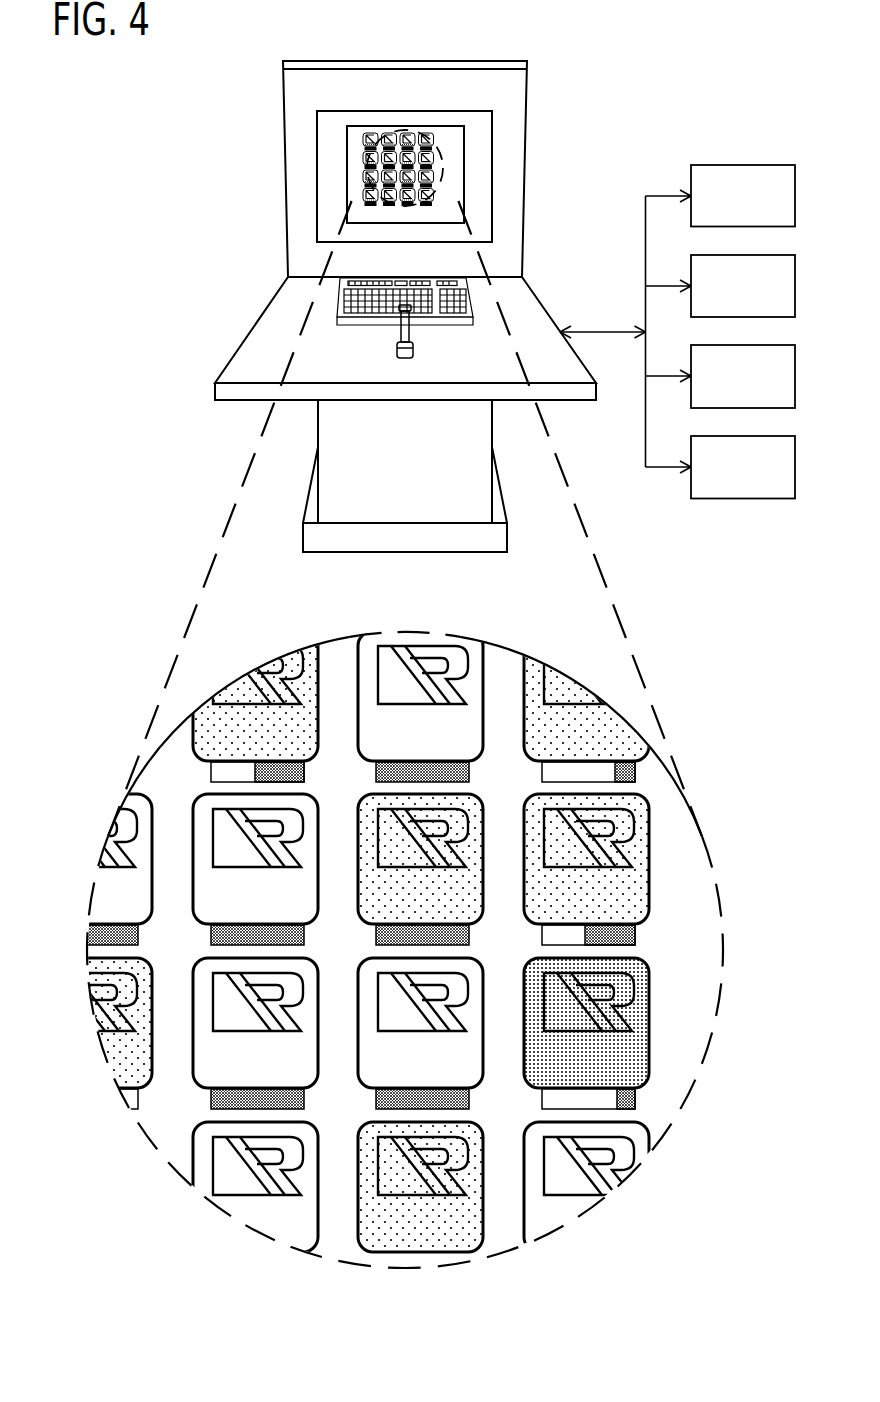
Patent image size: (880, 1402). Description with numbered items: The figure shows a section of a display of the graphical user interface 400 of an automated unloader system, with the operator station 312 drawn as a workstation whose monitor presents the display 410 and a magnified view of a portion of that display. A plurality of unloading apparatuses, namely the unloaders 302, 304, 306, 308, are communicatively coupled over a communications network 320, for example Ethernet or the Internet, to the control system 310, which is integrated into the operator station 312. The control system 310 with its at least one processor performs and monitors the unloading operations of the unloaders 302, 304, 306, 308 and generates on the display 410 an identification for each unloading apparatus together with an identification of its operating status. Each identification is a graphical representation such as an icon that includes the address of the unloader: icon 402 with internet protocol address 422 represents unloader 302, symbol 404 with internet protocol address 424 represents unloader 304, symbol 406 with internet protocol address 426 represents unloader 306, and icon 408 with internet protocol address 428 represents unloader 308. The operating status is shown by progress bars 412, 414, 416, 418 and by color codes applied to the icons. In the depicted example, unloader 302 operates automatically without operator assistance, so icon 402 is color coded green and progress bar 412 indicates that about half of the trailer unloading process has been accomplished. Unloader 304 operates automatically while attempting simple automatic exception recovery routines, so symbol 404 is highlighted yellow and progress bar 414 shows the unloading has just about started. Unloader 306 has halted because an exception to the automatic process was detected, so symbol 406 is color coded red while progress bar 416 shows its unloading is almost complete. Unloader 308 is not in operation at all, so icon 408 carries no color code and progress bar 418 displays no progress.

The graphical user interface 400 is at (667, 77).
The operator station 312 is at (271, 181).
The control system 310 is at (526, 156).
The communications network 320 is at (600, 325).
The unloader 302 is at (765, 212).
The unloader 304 is at (765, 302).
The unloader 306 is at (765, 392).
The unloader 308 is at (765, 483).
The display 410 is at (452, 142).
The icon 402 is at (650, 863).
The internet protocol address 422 is at (669, 926).
The progress bar 412 is at (672, 962).
The symbol 404 is at (484, 835).
The internet protocol address 424 is at (449, 928).
The progress bar 414 is at (389, 939).
The symbol 406 is at (648, 1025).
The internet protocol address 426 is at (653, 1088).
The progress bar 416 is at (647, 1124).
The icon 408 is at (193, 1025).
The internet protocol address 428 is at (172, 1088).
The progress bar 418 is at (179, 1123).